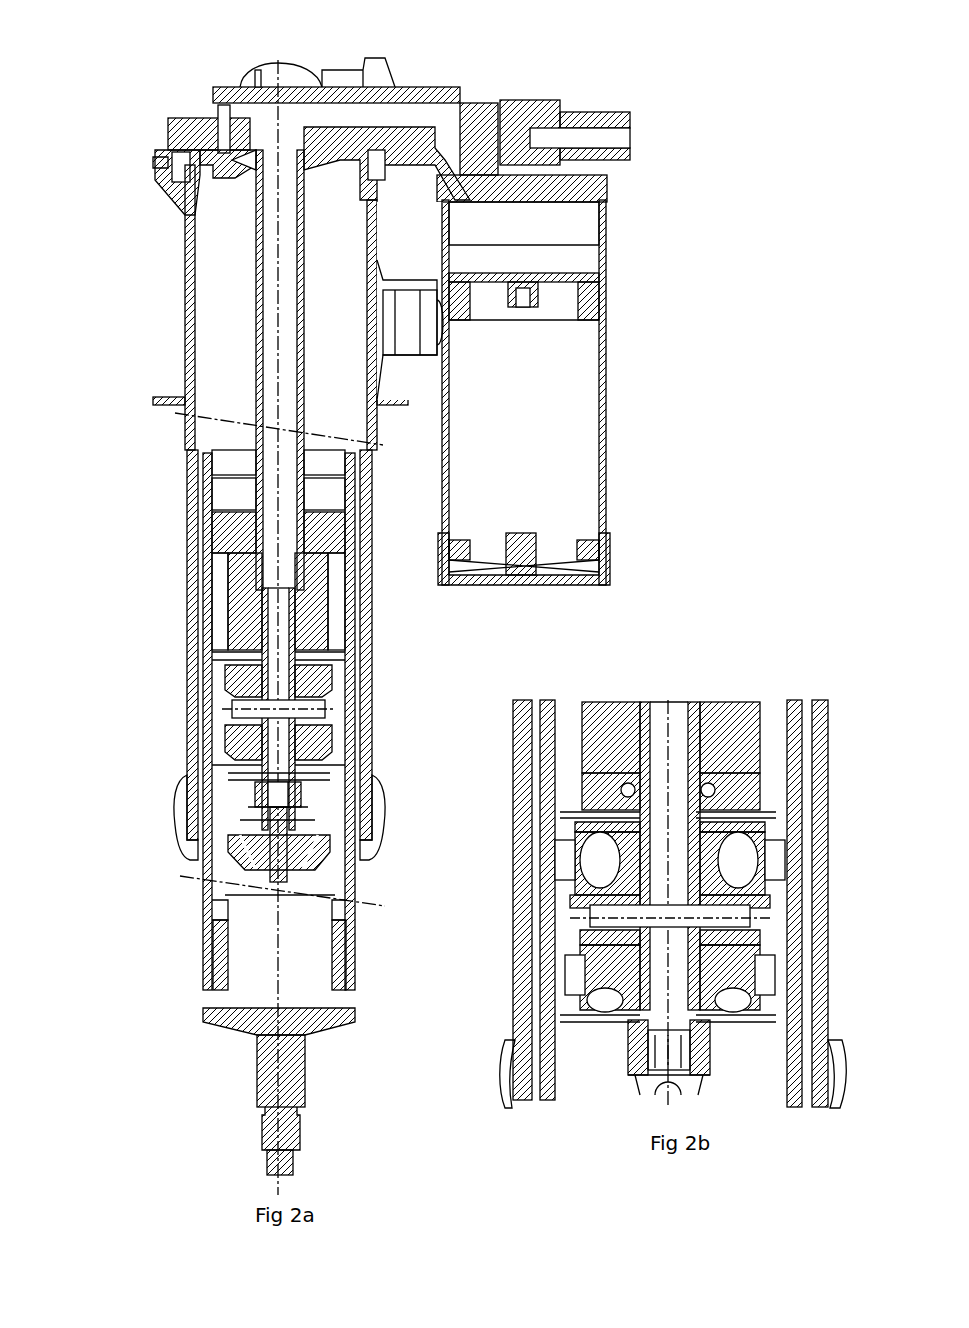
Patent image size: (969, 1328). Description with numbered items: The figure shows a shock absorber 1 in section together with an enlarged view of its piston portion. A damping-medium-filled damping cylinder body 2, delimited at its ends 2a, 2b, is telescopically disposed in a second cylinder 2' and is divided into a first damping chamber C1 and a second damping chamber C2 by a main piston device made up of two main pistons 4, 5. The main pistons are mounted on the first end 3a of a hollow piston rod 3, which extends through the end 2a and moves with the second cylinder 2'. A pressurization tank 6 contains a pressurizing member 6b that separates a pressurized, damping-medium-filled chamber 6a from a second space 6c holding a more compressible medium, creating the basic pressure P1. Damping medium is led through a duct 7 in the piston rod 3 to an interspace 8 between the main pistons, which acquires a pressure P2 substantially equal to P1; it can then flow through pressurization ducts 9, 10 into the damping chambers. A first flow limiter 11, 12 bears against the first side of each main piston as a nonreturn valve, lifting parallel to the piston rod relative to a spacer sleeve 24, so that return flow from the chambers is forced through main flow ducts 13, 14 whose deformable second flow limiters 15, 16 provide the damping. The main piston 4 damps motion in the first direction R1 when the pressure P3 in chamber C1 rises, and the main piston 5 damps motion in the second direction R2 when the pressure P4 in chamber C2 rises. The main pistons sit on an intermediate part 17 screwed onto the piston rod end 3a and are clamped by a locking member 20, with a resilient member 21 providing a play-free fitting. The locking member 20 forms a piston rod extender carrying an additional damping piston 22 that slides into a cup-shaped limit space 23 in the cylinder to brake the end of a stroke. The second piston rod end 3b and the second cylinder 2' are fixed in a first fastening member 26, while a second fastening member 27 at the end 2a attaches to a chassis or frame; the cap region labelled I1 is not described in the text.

In FIG. 2A, the shock absorber 1 is at (202, 99).
In FIG. 2A, the duct 7 is at (327, 123).
In FIG. 2A, the second fastening member 27 is at (172, 117).
In FIG. 2A, the cap / insert I1 is at (180, 133).
In FIG. 2A, the second piston rod end 3b is at (247, 168).
In FIG. 2A, the hollow piston rod 3 is at (253, 248).
In FIG. 2A, the second cylinder 2' is at (273, 502).
In FIG. 2A, the damping cylinder body 2 is at (238, 721).
In FIG. 2A, the first end of the damping cylinder 2a is at (207, 565).
In FIG. 2A, the first end of the piston rod 3a is at (255, 598).
In FIG. 2A, the first damping chamber C1 is at (220, 627).
In FIG. 2A, the first main piston 4 is at (228, 670).
In FIG. 2A, the interspace 8 is at (215, 702).
In FIG. 2A, the second main piston 5 is at (190, 795).
In FIG. 2A, the second damping chamber C2 is at (235, 822).
In FIG. 2A, the additional damping piston 22 is at (238, 878).
In FIG. 2A, the second end of the damping cylinder 2b is at (214, 950).
In FIG. 2A, the limit space 23 is at (207, 997).
In FIG. 2A, the first fastening member 26 is at (272, 1090).
In FIG. 2A, the pressurization tank 6 is at (602, 368).
In FIG. 2A, the pressurized chamber 6a is at (577, 257).
In FIG. 2A, the pressurizing member 6b is at (600, 298).
In FIG. 2A, the second space 6c is at (542, 473).
In FIG. 2A, the basic pressure P1 is at (520, 229).
In FIG. 2A, the first direction R1 is at (100, 640).
In FIG. 2A, the second direction R2 is at (100, 510).
In FIG. 2B, the second direction R2 is at (458, 965).
In FIG. 2B, the spacer sleeve 24 is at (720, 805).
In FIG. 2B, the resilient member 21 is at (582, 813).
In FIG. 2B, the first flow limiter 11 is at (578, 820).
In FIG. 2B, the pressurization duct 9 is at (615, 873).
In FIG. 2B, the main flow duct 13 is at (567, 838).
In FIG. 2B, the second flow limiter 15 is at (588, 890).
In FIG. 2B, the intermediate part 17 is at (737, 918).
In FIG. 2B, the second flow limiter 16 is at (572, 943).
In FIG. 2B, the main flow duct 14 is at (583, 992).
In FIG. 2B, the pressurization duct 10 is at (610, 1012).
In FIG. 2B, the first flow limiter 12 is at (632, 1020).
In FIG. 2B, the locking member 20 is at (710, 1060).
In FIG. 2B, the interspace pressure P2 is at (568, 907).
In FIG. 2B, the first damping chamber pressure P3 is at (568, 759).
In FIG. 2B, the second damping chamber pressure P4 is at (606, 1074).